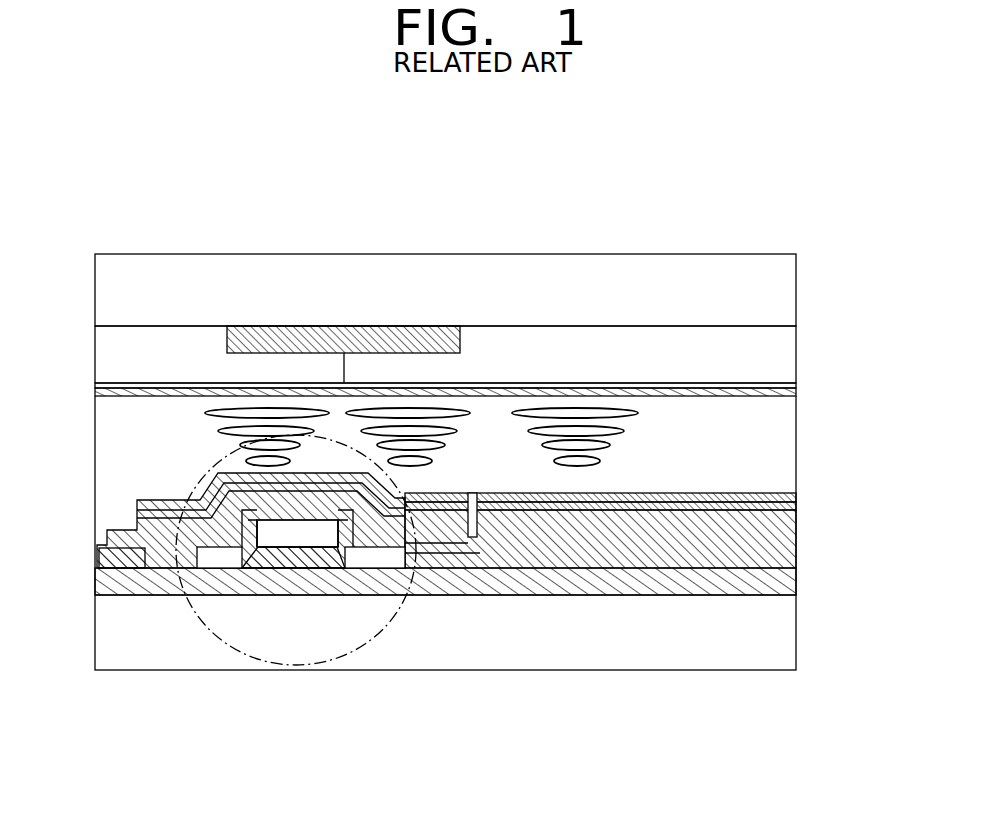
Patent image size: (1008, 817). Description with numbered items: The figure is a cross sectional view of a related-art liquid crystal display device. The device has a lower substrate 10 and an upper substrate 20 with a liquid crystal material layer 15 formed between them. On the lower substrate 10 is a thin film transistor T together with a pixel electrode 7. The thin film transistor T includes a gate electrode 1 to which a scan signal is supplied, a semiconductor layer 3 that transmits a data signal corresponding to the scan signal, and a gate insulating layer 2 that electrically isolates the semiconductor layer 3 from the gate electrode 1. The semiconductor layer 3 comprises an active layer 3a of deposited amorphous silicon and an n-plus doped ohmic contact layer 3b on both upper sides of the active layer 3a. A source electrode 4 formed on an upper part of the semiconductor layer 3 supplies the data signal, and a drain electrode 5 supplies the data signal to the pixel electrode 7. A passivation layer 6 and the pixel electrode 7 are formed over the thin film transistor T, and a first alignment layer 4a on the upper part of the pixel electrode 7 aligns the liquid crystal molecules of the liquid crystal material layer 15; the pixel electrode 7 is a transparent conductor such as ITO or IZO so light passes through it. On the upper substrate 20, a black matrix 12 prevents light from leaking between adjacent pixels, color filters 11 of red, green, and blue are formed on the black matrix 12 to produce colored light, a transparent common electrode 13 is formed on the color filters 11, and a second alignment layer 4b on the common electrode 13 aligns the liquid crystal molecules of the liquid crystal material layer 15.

The thin film transistor T is at (200, 474).
The gate electrode 1 is at (277, 560).
The gate insulating layer 2 is at (790, 575).
The semiconductor layer 3 is at (325, 642).
The active layer 3a is at (386, 560).
The ohmic contact layer 3b is at (278, 530).
The source electrode 4 is at (199, 548).
The first alignment layer 4a is at (795, 493).
The second alignment layer 4b is at (795, 397).
The drain electrode 5 is at (477, 545).
The passivation layer 6 is at (795, 540).
The pixel electrode 7 is at (795, 505).
The lower substrate 10 is at (790, 628).
The color filters 11 is at (790, 342).
The black matrix 12 is at (404, 326).
The common electrode 13 is at (795, 383).
The liquid crystal material layer 15 is at (790, 445).
The upper substrate 20 is at (788, 292).